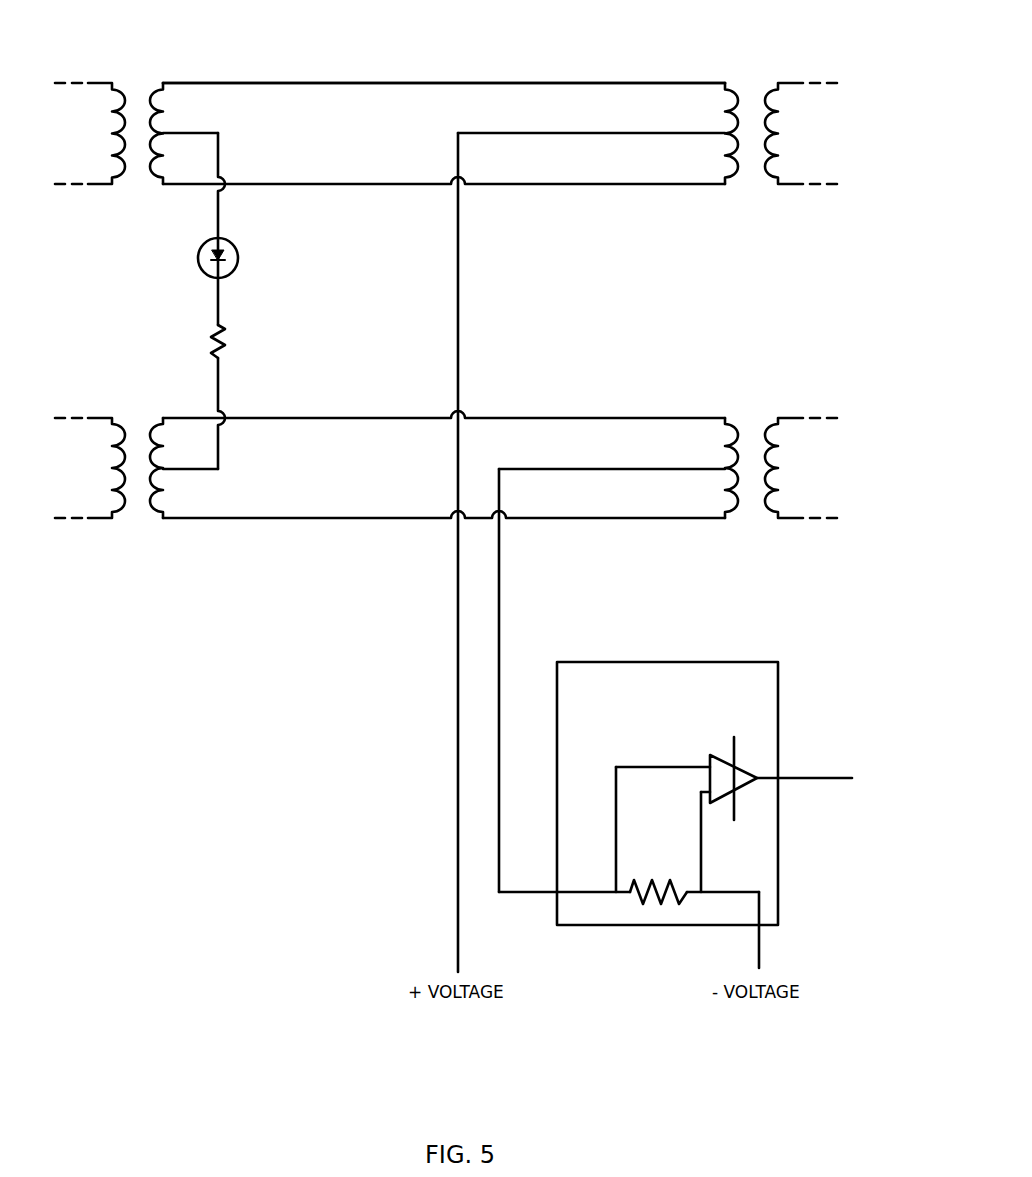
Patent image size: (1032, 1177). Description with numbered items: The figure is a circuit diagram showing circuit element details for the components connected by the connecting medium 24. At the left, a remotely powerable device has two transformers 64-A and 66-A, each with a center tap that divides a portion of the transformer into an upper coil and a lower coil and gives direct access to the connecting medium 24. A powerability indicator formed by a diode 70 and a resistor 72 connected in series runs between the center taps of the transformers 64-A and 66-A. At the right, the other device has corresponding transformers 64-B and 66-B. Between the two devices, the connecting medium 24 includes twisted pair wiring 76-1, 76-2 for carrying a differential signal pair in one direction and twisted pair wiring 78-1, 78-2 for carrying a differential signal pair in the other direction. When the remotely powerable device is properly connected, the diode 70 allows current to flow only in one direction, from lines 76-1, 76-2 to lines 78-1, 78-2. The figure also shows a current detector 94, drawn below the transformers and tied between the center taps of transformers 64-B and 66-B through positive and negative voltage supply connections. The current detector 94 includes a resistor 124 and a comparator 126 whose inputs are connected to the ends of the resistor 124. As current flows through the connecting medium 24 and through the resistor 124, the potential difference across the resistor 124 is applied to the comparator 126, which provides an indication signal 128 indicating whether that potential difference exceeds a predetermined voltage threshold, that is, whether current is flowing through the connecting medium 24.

The connecting medium 24 is at (372, 63).
The transformer 64-A is at (152, 70).
The transformer 64-B is at (765, 70).
The transformer 66-A is at (152, 405).
The transformer 66-B is at (765, 405).
The diode 70 is at (198, 259).
The resistor 72 is at (210, 344).
The twisted pair wiring 76-1 is at (335, 85).
The twisted pair wiring 76-2 is at (343, 186).
The twisted pair wiring 78-1 is at (318, 420).
The twisted pair wiring 78-2 is at (318, 520).
The current detector 94 is at (727, 721).
The resistor 124 is at (659, 883).
The comparator 126 is at (708, 762).
The indication signal 128 is at (899, 830).